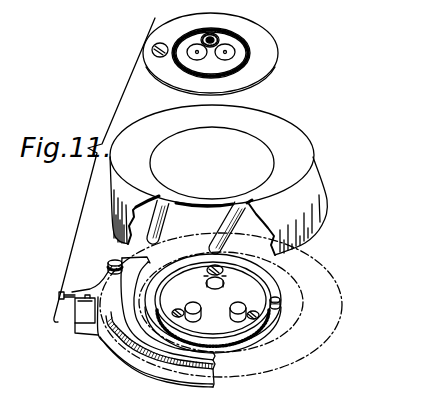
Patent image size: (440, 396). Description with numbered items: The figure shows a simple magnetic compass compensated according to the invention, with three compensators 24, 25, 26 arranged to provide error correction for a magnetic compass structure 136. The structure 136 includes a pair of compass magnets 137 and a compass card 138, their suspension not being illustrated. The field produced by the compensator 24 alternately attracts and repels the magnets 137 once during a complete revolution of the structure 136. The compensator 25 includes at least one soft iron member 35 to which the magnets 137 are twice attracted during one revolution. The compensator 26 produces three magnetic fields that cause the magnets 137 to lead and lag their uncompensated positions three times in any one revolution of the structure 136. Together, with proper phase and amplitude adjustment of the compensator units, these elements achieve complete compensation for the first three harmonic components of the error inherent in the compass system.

The compensator 24 is at (285, 53).
The magnetic compass structure 136 is at (318, 143).
The compass magnets 137 is at (226, 229).
The compass card 138 is at (103, 196).
The compensator 25 is at (83, 288).
The compensator 26 is at (278, 292).
The soft iron member 35 is at (78, 313).